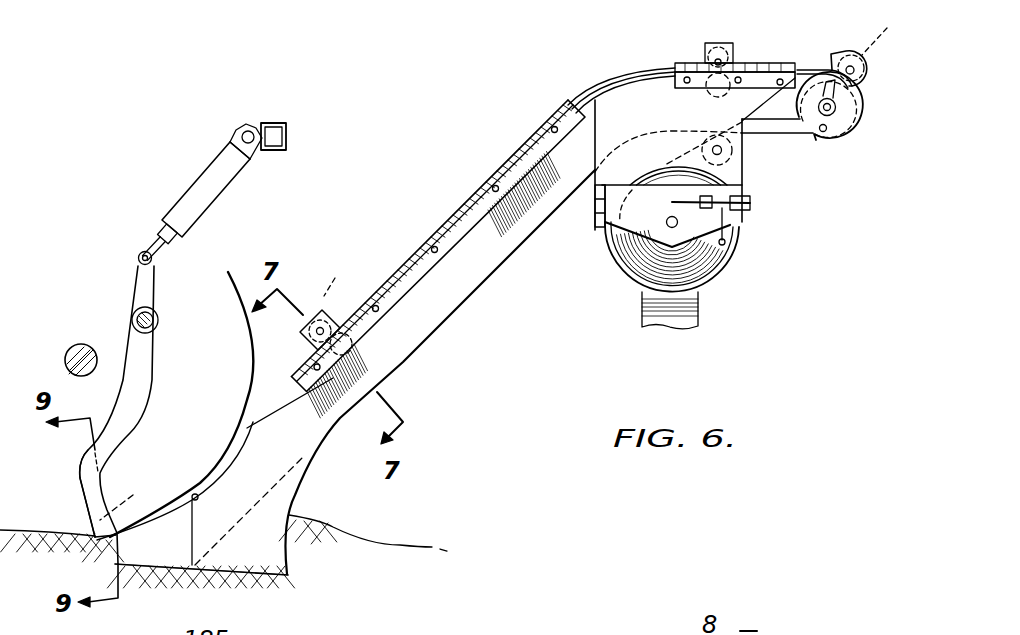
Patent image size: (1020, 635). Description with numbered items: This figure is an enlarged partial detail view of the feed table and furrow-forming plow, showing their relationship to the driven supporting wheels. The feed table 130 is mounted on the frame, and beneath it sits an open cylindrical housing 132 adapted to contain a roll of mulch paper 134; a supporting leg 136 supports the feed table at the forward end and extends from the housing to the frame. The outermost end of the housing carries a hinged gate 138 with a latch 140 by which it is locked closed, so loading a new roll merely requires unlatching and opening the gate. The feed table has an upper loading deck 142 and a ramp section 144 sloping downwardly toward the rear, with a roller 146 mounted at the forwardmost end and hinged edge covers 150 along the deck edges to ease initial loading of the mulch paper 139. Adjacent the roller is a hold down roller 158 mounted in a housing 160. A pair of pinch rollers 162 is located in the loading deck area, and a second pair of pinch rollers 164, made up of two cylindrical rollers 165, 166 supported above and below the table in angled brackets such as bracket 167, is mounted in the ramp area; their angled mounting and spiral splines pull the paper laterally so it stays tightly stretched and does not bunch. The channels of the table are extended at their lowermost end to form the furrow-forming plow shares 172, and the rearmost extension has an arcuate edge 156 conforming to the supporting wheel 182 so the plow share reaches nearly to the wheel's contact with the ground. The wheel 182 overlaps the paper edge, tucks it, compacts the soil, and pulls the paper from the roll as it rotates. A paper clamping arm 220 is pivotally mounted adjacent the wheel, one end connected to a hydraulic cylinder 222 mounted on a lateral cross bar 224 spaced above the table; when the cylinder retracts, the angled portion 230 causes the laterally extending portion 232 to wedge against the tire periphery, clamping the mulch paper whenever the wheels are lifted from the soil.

The feed table 130 is at (487, 282).
The open cylindrical housing 132 is at (620, 250).
The roll of mulch paper 134 is at (640, 258).
The supporting leg 136 is at (698, 312).
The hinged gate 138 is at (633, 218).
The mulch paper 139 is at (267, 397).
The latch 140 is at (733, 197).
The upper loading deck 142 is at (683, 55).
The ramp section 144 is at (414, 244).
The roller 146 is at (843, 143).
The hinged edge covers 150 is at (750, 62).
The arcuate edge 156 is at (193, 567).
The hold down roller 158 is at (880, 30).
The housing 160 is at (845, 50).
The pinch rollers 162 is at (717, 43).
The second pair of pinch rollers 164 is at (341, 306).
The cylindrical roller 165 is at (323, 277).
The cylindrical roller 166 is at (363, 343).
The bracket 167 is at (843, 629).
The furrow-forming plow share 172 is at (300, 515).
The supporting wheel 182 is at (166, 453).
The paper clamping arm 220 is at (162, 345).
The hydraulic cylinder 222 is at (213, 168).
The lateral cross bar 224 is at (287, 140).
The angled portion 230 is at (93, 498).
The laterally extending portion 232 is at (139, 500).